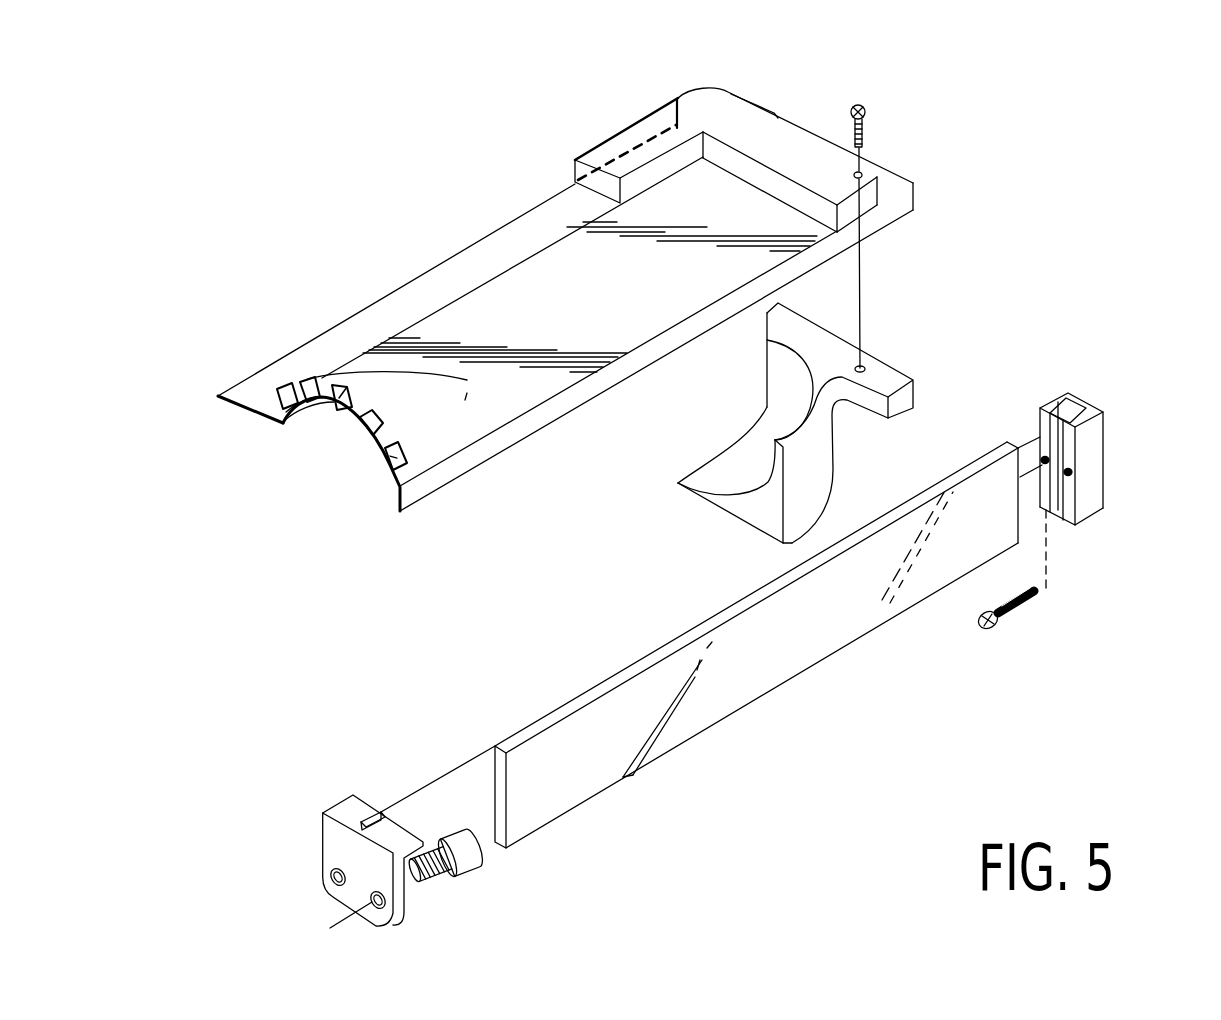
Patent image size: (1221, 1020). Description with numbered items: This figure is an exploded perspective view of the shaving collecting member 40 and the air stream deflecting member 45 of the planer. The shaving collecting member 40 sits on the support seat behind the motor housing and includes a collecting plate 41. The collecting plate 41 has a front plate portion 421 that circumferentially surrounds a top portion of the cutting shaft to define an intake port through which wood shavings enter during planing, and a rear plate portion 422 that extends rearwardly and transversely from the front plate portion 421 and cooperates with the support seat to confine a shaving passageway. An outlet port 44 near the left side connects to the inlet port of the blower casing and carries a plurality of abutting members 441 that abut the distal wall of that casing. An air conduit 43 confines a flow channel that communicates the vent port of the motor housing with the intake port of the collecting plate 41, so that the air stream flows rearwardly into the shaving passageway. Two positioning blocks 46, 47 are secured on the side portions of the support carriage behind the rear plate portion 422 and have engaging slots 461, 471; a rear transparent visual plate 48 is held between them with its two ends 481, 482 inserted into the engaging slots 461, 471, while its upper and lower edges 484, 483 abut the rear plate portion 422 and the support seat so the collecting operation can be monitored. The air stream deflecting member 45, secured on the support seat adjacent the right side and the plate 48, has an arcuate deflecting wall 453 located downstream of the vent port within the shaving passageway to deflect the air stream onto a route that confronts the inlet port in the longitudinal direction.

The shaving collecting member 40 is at (338, 298).
The collecting plate 41 is at (275, 362).
The front plate portion 421 is at (448, 280).
The rear plate portion 422 is at (510, 423).
The air conduit 43 is at (738, 117).
The outlet port 44 is at (397, 480).
The abutting members 441 is at (338, 408).
The air stream deflecting member 45 is at (878, 345).
The arcuate deflecting wall 453 is at (743, 475).
The positioning block 46 is at (321, 828).
The engaging slot 461 is at (380, 812).
The positioning block 47 is at (1107, 475).
The engaging slot 471 is at (1065, 408).
The rear transparent visual plate 48 is at (765, 680).
The end 481 is at (522, 825).
The end 482 is at (992, 530).
The lower edge 483 is at (735, 713).
The upper edge 484 is at (627, 690).